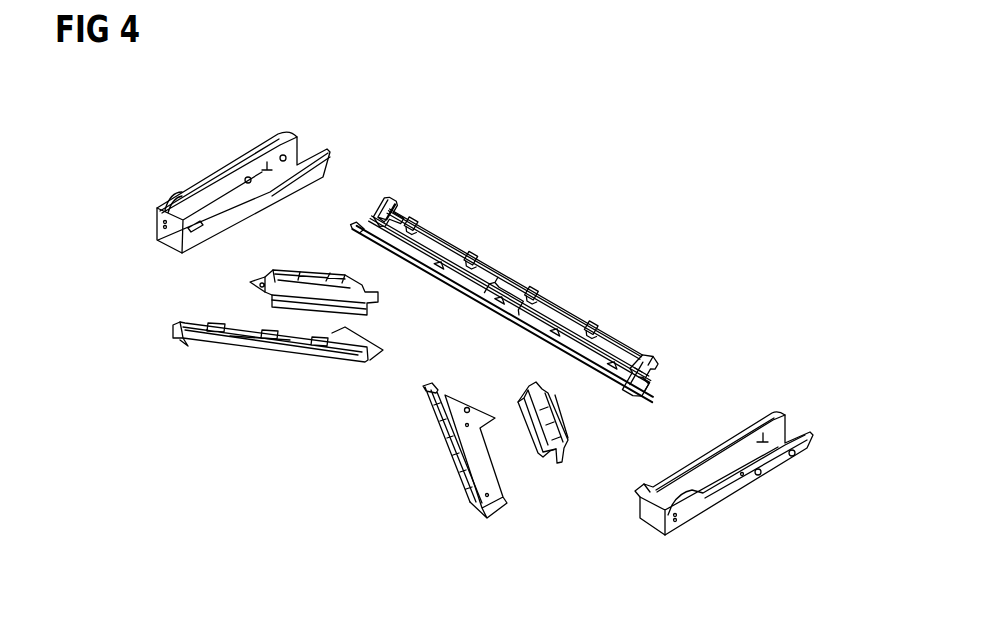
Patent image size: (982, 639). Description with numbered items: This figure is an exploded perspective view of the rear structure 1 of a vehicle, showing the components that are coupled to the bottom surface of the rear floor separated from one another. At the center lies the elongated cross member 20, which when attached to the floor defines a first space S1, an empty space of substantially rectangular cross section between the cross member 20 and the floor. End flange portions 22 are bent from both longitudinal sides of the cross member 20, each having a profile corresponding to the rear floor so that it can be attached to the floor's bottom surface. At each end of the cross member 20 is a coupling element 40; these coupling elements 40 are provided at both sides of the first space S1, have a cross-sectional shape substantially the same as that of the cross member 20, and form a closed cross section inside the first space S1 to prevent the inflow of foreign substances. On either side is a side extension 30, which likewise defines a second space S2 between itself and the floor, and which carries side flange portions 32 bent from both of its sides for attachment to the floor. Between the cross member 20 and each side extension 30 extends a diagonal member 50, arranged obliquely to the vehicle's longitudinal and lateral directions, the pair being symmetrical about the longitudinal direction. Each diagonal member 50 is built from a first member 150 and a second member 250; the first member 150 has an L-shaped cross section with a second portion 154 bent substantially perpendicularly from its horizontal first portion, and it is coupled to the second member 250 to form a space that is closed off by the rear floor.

The rear structure 1 is at (596, 232).
The cross member 20 is at (526, 278).
The end flange portions 22 is at (576, 306).
The side extension 30 is at (472, 327).
The side flange portions 32 is at (212, 176).
The coupling element 40 is at (384, 200).
The diagonal member 50 is at (84, 283).
The first member 150 is at (336, 442).
The second portion 154 is at (237, 342).
The second member 250 is at (243, 289).
The first space S1 is at (482, 277).
The second space S2 is at (267, 161).